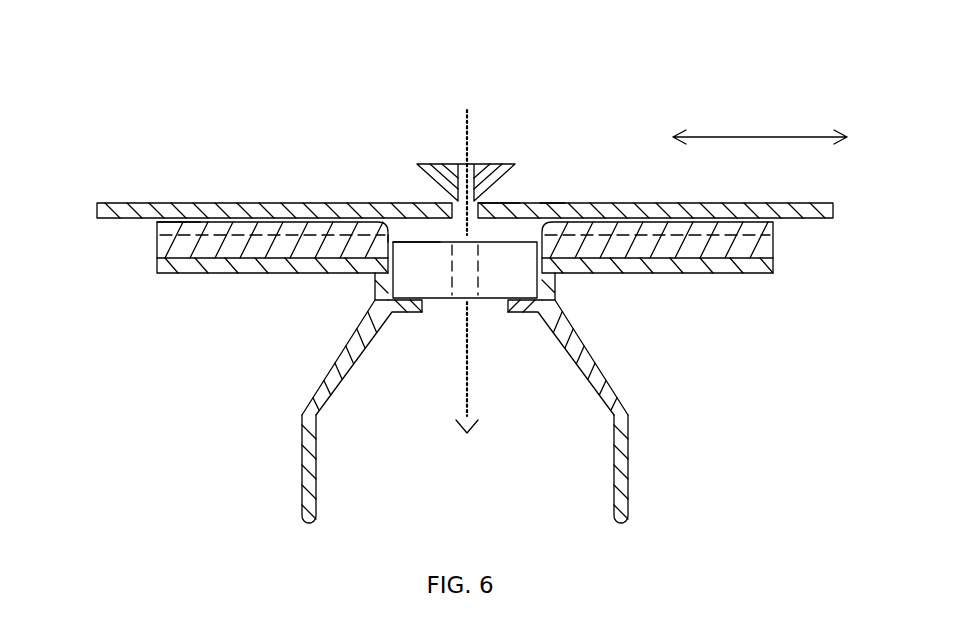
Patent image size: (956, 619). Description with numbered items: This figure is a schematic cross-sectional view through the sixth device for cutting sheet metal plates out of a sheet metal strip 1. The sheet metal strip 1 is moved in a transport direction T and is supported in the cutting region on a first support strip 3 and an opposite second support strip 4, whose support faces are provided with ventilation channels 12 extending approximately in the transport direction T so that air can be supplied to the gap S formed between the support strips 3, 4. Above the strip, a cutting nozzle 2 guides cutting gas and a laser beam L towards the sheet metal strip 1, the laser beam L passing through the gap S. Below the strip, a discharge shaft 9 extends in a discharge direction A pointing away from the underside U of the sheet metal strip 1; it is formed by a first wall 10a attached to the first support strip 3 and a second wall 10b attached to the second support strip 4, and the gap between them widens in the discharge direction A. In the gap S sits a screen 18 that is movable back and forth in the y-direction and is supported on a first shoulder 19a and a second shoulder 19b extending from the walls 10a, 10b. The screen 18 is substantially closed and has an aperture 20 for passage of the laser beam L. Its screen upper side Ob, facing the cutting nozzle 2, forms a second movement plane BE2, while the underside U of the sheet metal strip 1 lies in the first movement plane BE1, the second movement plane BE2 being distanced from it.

The sheet metal strip 1 is at (822, 204).
The cutting nozzle 2 is at (420, 168).
The first support strip 3 is at (168, 245).
The second support strip 4 is at (763, 250).
The ventilation channels 12 is at (165, 234).
The screen 18 is at (515, 284).
The first shoulder 19a is at (372, 312).
The second shoulder 19b is at (562, 316).
The aperture 20 is at (460, 279).
The first wall 10a is at (304, 468).
The second wall 10b is at (628, 470).
The discharge shaft 9 is at (452, 476).
The discharge direction A is at (455, 428).
The laser beam L is at (468, 147).
The transport direction T is at (760, 125).
The underside U is at (510, 204).
The screen upper side Ob is at (553, 204).
The gap S is at (407, 234).
The first movement plane BE1 is at (163, 219).
The second movement plane BE2 is at (427, 242).